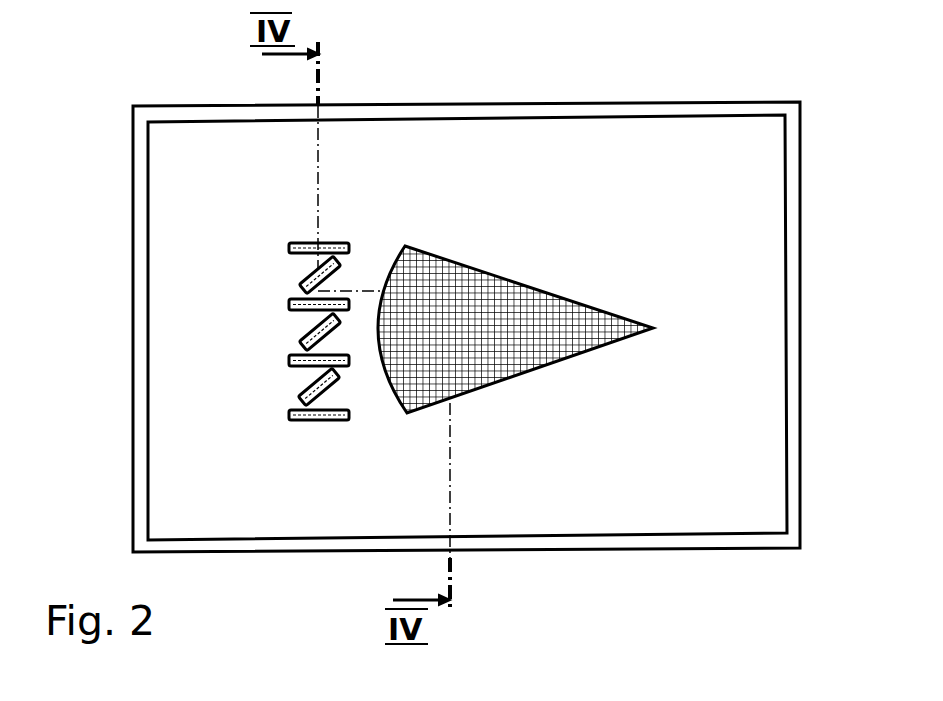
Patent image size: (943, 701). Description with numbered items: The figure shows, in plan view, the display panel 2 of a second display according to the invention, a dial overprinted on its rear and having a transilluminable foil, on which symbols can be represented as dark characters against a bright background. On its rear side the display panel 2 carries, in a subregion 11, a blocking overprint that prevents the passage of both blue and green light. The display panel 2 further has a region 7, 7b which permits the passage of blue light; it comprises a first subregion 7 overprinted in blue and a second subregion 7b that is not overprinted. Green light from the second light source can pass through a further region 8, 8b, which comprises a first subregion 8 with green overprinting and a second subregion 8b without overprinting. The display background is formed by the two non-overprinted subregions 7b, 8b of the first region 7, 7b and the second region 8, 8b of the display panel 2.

The display panel 2 is at (728, 104).
The first subregion of the blue-passing region 7 is at (305, 287).
The second subregion of the blue-passing region 7b is at (534, 163).
The first subregion of the green-passing region 8 is at (298, 246).
The second subregion of the green-passing region 8b is at (536, 160).
The subregion with blocking overprint 11 is at (580, 302).